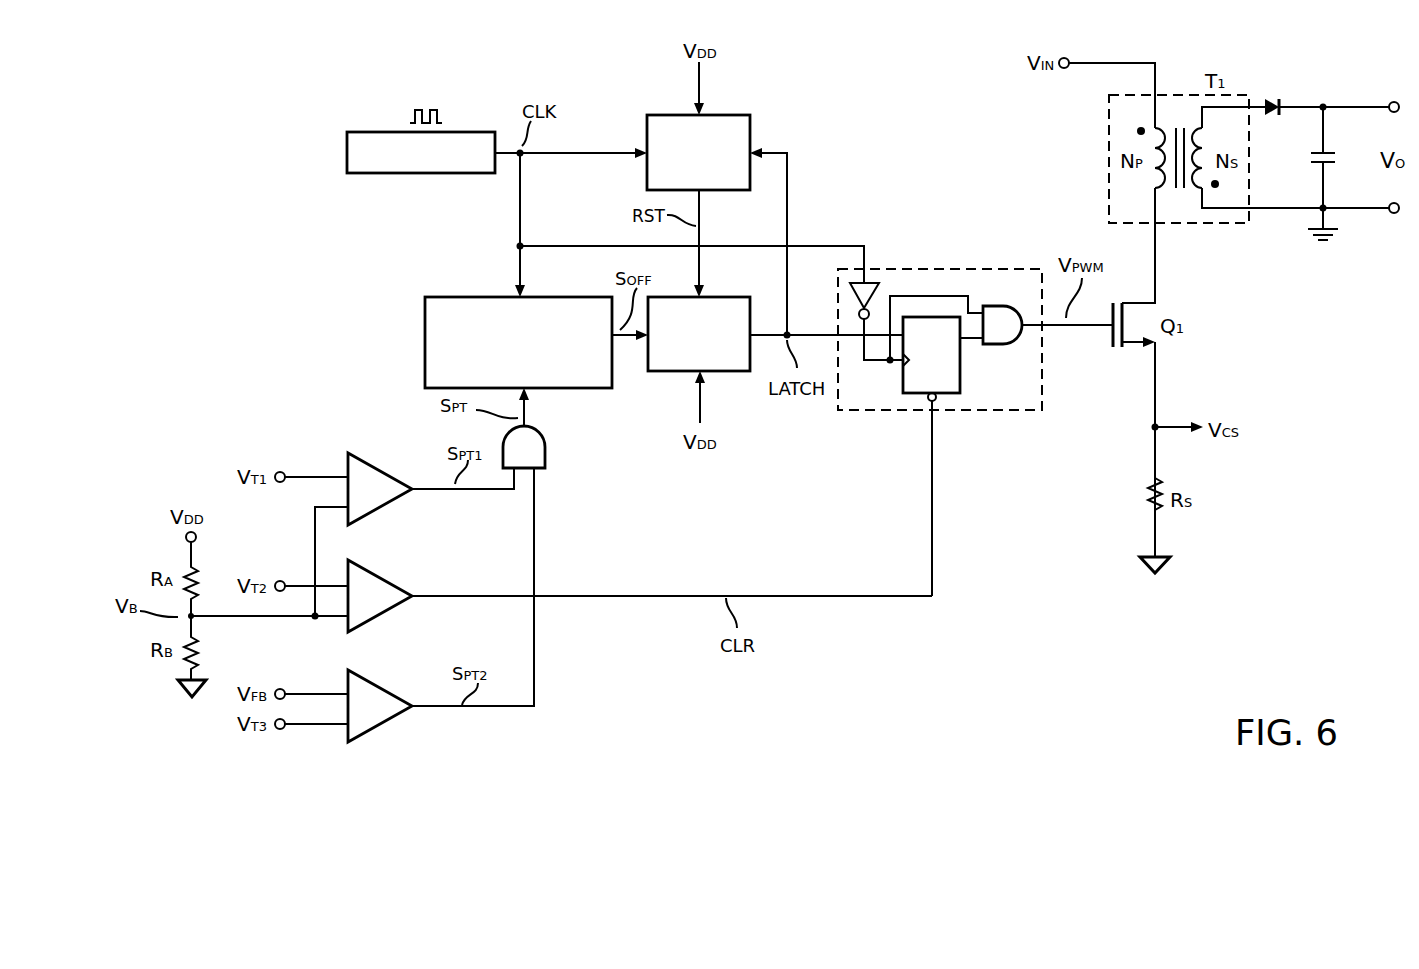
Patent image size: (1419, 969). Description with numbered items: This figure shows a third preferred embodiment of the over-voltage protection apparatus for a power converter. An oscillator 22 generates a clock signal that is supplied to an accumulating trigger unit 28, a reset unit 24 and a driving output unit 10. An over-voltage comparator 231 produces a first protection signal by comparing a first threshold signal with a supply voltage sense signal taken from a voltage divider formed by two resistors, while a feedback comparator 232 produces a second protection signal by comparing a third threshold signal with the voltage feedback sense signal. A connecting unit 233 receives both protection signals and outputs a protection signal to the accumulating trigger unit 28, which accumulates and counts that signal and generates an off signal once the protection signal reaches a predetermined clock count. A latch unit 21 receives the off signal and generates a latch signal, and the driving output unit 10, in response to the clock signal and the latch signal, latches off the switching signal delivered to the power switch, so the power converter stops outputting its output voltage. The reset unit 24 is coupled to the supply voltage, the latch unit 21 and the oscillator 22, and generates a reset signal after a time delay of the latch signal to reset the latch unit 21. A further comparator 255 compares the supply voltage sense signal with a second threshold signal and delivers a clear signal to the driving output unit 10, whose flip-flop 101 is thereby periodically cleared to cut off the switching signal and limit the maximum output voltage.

The driving output unit 10 is at (940, 317).
The latch unit 21 is at (738, 374).
The oscillator 22 is at (468, 130).
The reset unit 24 is at (728, 114).
The accumulating trigger unit 28 is at (495, 296).
The flip-flop 101 is at (961, 374).
The over-voltage comparator 231 is at (381, 463).
The feedback comparator 232 is at (385, 682).
The connecting unit 233 is at (546, 458).
The third comparator 255 is at (381, 571).